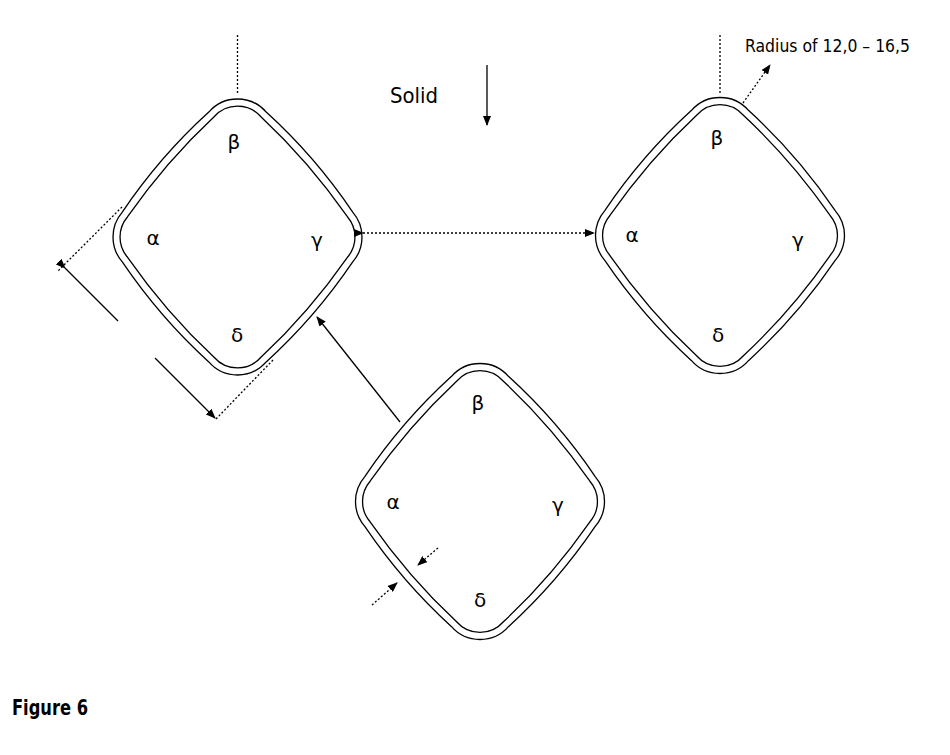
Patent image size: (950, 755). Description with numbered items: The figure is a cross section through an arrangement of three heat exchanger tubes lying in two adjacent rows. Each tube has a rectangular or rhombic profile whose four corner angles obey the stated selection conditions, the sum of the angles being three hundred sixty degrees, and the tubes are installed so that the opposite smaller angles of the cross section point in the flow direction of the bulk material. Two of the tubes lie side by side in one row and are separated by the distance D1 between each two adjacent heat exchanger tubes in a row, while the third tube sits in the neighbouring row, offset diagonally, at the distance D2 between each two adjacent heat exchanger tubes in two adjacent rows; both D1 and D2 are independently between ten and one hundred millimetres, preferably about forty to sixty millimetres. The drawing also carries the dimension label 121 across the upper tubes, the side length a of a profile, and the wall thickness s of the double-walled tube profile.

The center distance between adjacent profiles 121 is at (238, 46).
The distance between each two adjacent heat exchanger tubes in a row D1 is at (478, 215).
The distance between each two adjacent heat exchanger tubes in two adjacent rows D2 is at (360, 369).
The side length of profile a is at (165, 313).
The wall thickness of profile s is at (396, 576).